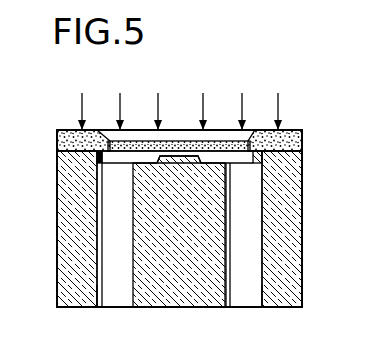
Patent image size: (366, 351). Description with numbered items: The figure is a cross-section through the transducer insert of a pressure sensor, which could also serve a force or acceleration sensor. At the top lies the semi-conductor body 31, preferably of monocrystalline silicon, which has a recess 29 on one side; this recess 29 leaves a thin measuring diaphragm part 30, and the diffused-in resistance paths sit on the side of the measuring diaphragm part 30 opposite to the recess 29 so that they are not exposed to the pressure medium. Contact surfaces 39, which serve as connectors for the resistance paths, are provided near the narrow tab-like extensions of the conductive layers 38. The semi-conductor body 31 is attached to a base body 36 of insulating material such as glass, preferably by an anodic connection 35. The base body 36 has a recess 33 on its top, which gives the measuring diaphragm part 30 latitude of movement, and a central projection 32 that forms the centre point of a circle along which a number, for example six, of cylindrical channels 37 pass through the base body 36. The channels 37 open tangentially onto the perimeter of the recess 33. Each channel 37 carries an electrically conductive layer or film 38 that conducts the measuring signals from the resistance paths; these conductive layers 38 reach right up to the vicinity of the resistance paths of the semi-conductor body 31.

The recess 29 is at (213, 143).
The measuring diaphragm part 30 is at (170, 156).
The semi-conductor body 31 is at (280, 140).
The central projection 32 is at (185, 156).
The recess 33 is at (145, 156).
The anodic connection 35 is at (302, 142).
The base body 36 is at (289, 270).
The cylindrical channels 37 is at (95, 288).
The electrically conductive layer 38 is at (103, 220).
The contact surfaces 39 is at (93, 130).